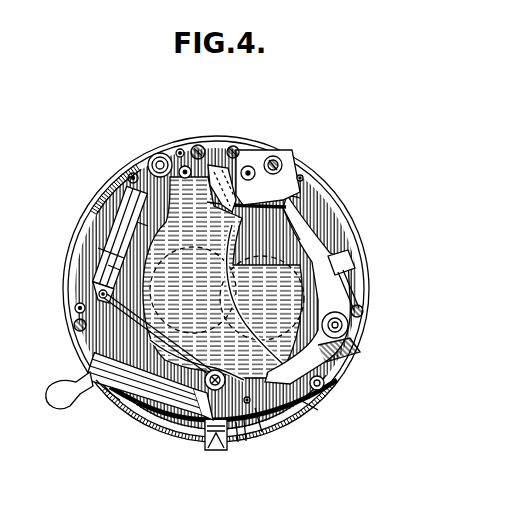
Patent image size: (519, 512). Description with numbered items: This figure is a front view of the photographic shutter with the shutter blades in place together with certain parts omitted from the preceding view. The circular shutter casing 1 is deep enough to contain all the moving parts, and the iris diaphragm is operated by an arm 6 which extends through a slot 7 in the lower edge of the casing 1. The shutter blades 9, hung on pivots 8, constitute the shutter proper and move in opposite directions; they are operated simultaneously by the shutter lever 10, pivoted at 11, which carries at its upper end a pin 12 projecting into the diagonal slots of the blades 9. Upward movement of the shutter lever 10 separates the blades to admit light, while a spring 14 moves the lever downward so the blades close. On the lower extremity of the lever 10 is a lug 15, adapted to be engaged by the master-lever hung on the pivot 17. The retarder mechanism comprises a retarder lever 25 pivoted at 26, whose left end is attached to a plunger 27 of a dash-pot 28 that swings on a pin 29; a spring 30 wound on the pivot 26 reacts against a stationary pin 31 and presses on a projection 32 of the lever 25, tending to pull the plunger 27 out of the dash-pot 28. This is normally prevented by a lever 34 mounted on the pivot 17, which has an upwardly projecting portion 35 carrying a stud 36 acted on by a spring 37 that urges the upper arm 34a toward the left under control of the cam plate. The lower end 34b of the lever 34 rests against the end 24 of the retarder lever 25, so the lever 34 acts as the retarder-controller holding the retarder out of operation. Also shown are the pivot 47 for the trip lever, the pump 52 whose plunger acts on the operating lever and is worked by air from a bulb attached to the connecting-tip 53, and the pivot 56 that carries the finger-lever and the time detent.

The shutter casing 1 is at (60, 312).
The arm 6 is at (216, 452).
The slot 7 is at (262, 439).
The pivots 8 is at (185, 164).
The shutter blades 9 is at (150, 278).
The shutter lever 10 is at (248, 165).
The pivot 11 is at (280, 162).
The pin 12 is at (218, 166).
The spring 14 is at (292, 247).
The lug 15 is at (280, 212).
The pivot 17 is at (344, 327).
The extremity of retarder lever 24 is at (293, 424).
The retarder lever 25 is at (241, 443).
The pivot 26 is at (181, 438).
The plunger 27 is at (99, 291).
The dash-pot 28 is at (118, 232).
The pin 29 is at (133, 162).
The spring 30 is at (127, 375).
The pin 31 is at (278, 429).
The projection 32 is at (110, 318).
The lever 34 is at (312, 344).
The upper end of lever 34a is at (293, 222).
The lower end of lever 34b is at (315, 409).
The upwardly projecting portion 35 is at (342, 251).
The stud 36 is at (350, 261).
The spring 37 is at (345, 288).
The pivot 47 is at (325, 387).
The pump 52 is at (110, 395).
The connecting-tip 53 is at (56, 403).
The pivot 56 is at (160, 152).